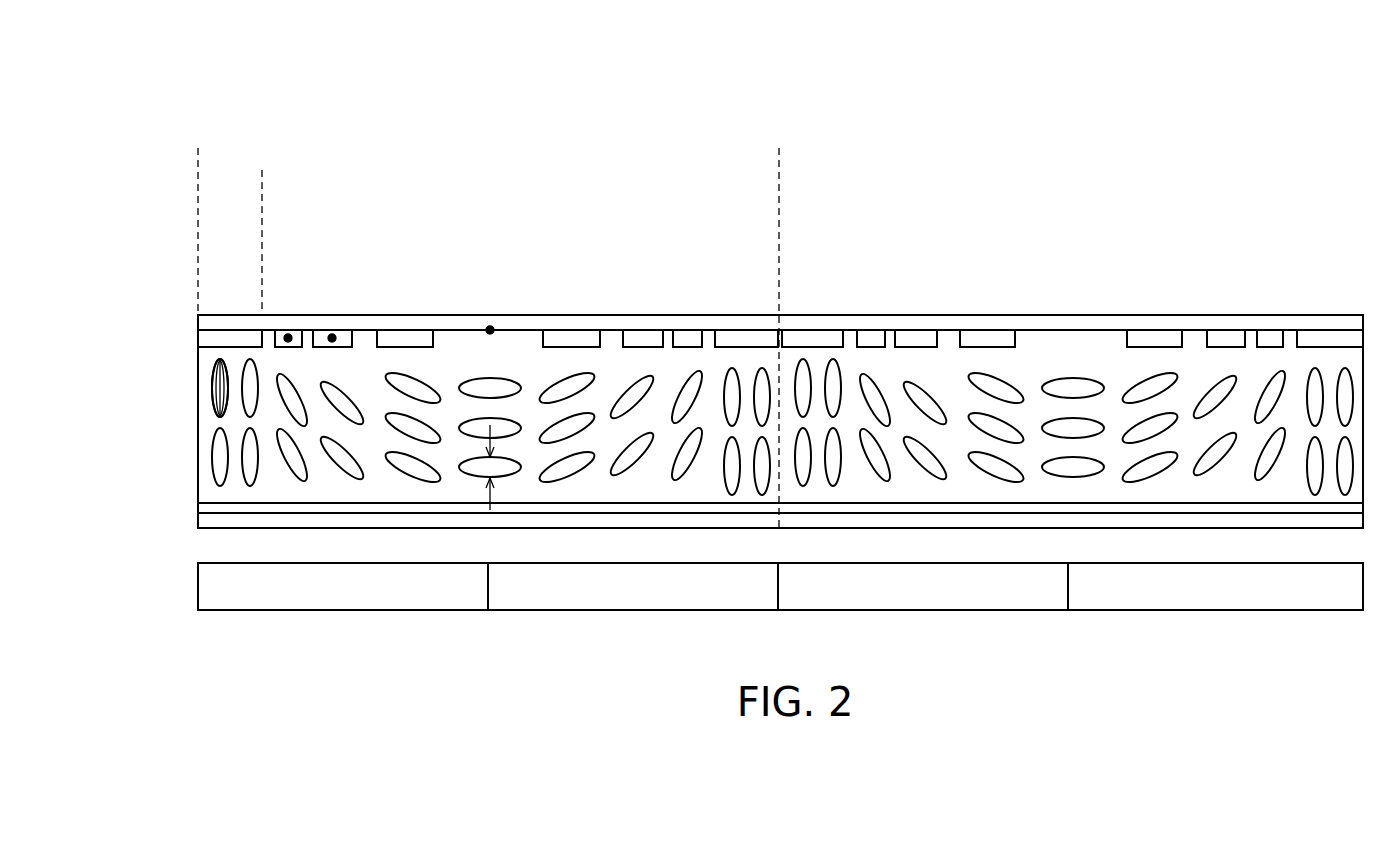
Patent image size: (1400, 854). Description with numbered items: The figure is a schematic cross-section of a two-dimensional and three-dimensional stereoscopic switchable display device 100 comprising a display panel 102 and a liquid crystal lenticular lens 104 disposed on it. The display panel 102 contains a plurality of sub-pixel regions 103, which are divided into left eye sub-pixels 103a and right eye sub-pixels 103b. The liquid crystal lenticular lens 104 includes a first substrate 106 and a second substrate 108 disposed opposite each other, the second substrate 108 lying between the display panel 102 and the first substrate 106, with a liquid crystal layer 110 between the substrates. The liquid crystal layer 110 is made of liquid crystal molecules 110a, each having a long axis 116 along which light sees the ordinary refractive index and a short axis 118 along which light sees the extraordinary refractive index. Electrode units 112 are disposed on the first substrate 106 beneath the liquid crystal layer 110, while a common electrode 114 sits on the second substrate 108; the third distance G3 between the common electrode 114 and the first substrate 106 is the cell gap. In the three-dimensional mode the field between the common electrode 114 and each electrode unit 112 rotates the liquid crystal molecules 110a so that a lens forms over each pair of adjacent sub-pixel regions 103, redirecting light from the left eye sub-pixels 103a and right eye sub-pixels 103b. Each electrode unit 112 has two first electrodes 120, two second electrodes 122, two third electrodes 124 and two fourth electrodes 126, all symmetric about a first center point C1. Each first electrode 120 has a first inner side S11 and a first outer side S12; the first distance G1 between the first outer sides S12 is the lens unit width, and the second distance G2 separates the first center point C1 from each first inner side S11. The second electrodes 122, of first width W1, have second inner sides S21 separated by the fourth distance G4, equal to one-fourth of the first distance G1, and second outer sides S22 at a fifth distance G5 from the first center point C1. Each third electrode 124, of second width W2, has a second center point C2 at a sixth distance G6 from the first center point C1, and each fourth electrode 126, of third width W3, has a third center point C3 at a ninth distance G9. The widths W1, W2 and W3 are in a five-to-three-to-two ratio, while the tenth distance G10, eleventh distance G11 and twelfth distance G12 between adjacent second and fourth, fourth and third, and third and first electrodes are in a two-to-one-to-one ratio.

The two-dimensional and three-dimensional stereoscopic switchable display device 100 is at (1222, 102).
The display panel 102 is at (147, 562).
The sub-pixel regions 103 is at (780, 586).
The left eye sub-pixel 103a is at (678, 586).
The right eye sub-pixel 103b is at (924, 586).
The liquid crystal lenticular lens 104 is at (147, 297).
The first substrate 106 is at (203, 326).
The second substrate 108 is at (203, 525).
The liquid crystal layer 110 is at (203, 447).
The liquid crystal molecules 110a is at (213, 390).
The electrode units 112 is at (1375, 195).
The common electrode 114 is at (203, 508).
The long axis 116 is at (215, 378).
The short axis 118 is at (500, 468).
The first electrodes 120 is at (745, 330).
The second electrodes 122 is at (562, 330).
The third electrodes 124 is at (688, 330).
The fourth electrodes 126 is at (637, 330).
The first center point C1 is at (492, 334).
The second center point C2 is at (290, 342).
The third center point C3 is at (334, 342).
The first inner side S11 is at (848, 330).
The first outer side S12 is at (776, 330).
The second inner side S21 is at (1022, 330).
The second outer side S22 is at (952, 330).
The first distance G1 is at (779, 152).
The second distance G2 is at (262, 178).
The third distance G3 is at (1373, 503).
The fourth distance G4 is at (543, 269).
The fifth distance G5 is at (490, 218).
The sixth distance G6 is at (490, 315).
The ninth distance G9 is at (490, 289).
The tenth distance G10 is at (330, 240).
The eleventh distance G11 is at (273, 240).
The twelfth distance G12 is at (228, 223).
The first width W1 is at (600, 269).
The second width W2 is at (650, 227).
The third width W3 is at (663, 269).